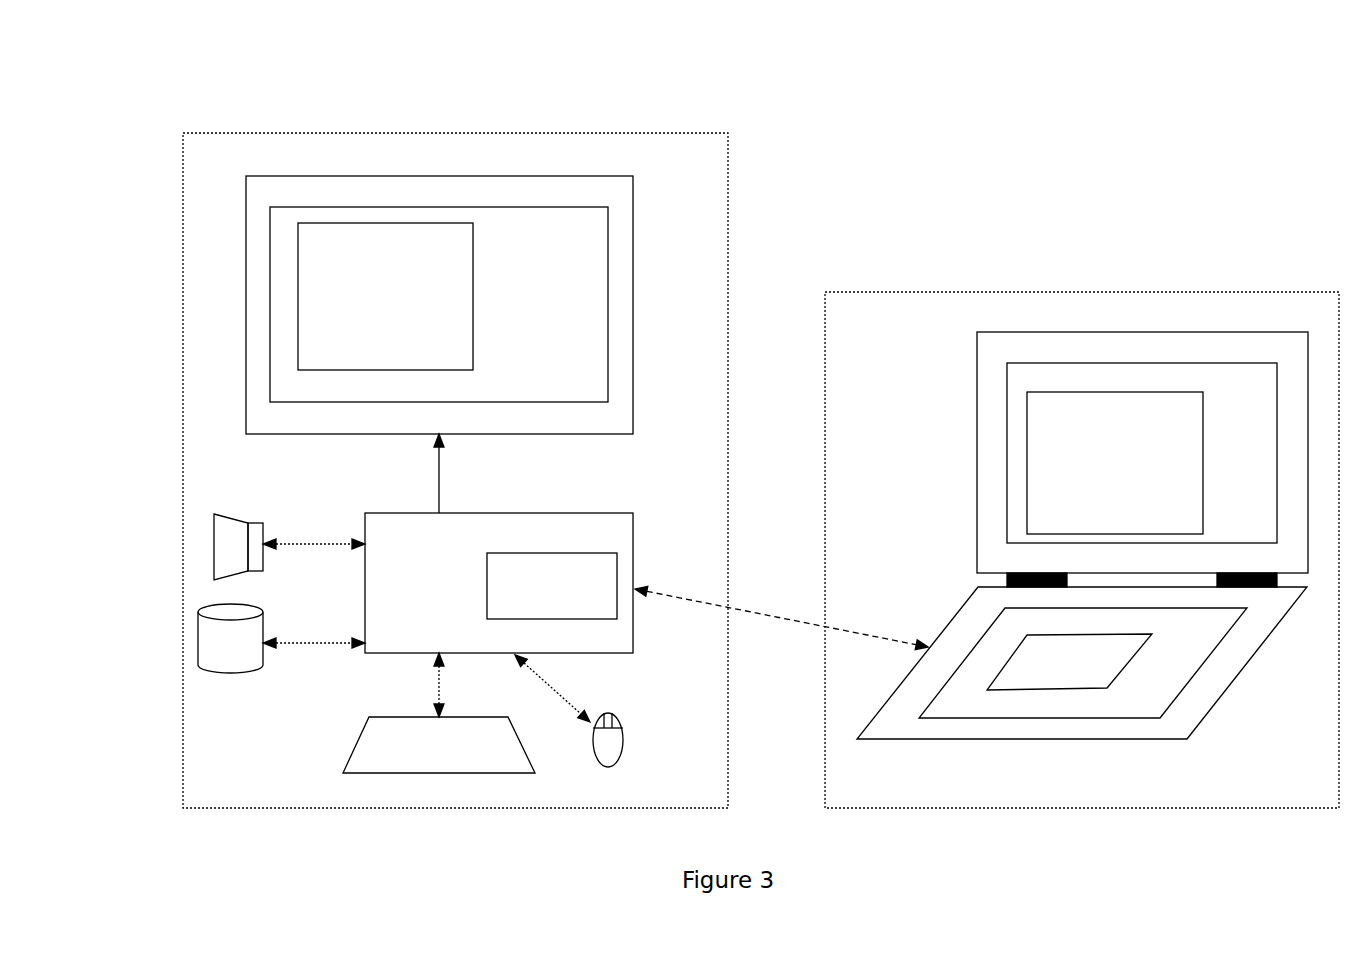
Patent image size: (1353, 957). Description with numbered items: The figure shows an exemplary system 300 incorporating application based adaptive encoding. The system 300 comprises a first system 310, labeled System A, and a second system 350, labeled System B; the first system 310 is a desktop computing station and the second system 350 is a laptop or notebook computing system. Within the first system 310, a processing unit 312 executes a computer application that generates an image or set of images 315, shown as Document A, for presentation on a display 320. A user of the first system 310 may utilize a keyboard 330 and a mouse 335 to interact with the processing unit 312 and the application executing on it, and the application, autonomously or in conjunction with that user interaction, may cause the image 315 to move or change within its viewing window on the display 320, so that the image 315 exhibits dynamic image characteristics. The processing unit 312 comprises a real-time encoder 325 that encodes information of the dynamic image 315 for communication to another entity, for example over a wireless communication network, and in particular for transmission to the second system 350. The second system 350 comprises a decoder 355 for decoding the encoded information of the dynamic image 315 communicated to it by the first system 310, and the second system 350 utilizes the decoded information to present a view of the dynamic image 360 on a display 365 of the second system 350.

The system 300 is at (243, 97).
The first system 310 is at (730, 165).
The processing unit 312 is at (633, 518).
The image or set of images 315 is at (473, 270).
The display 320 is at (633, 292).
The real-time encoder 325 is at (617, 562).
The keyboard 330 is at (356, 740).
The mouse 335 is at (623, 728).
The second system 350 is at (945, 292).
The decoder 355 is at (1053, 690).
The view of the dynamic image 360 is at (1027, 463).
The display 365 is at (977, 368).